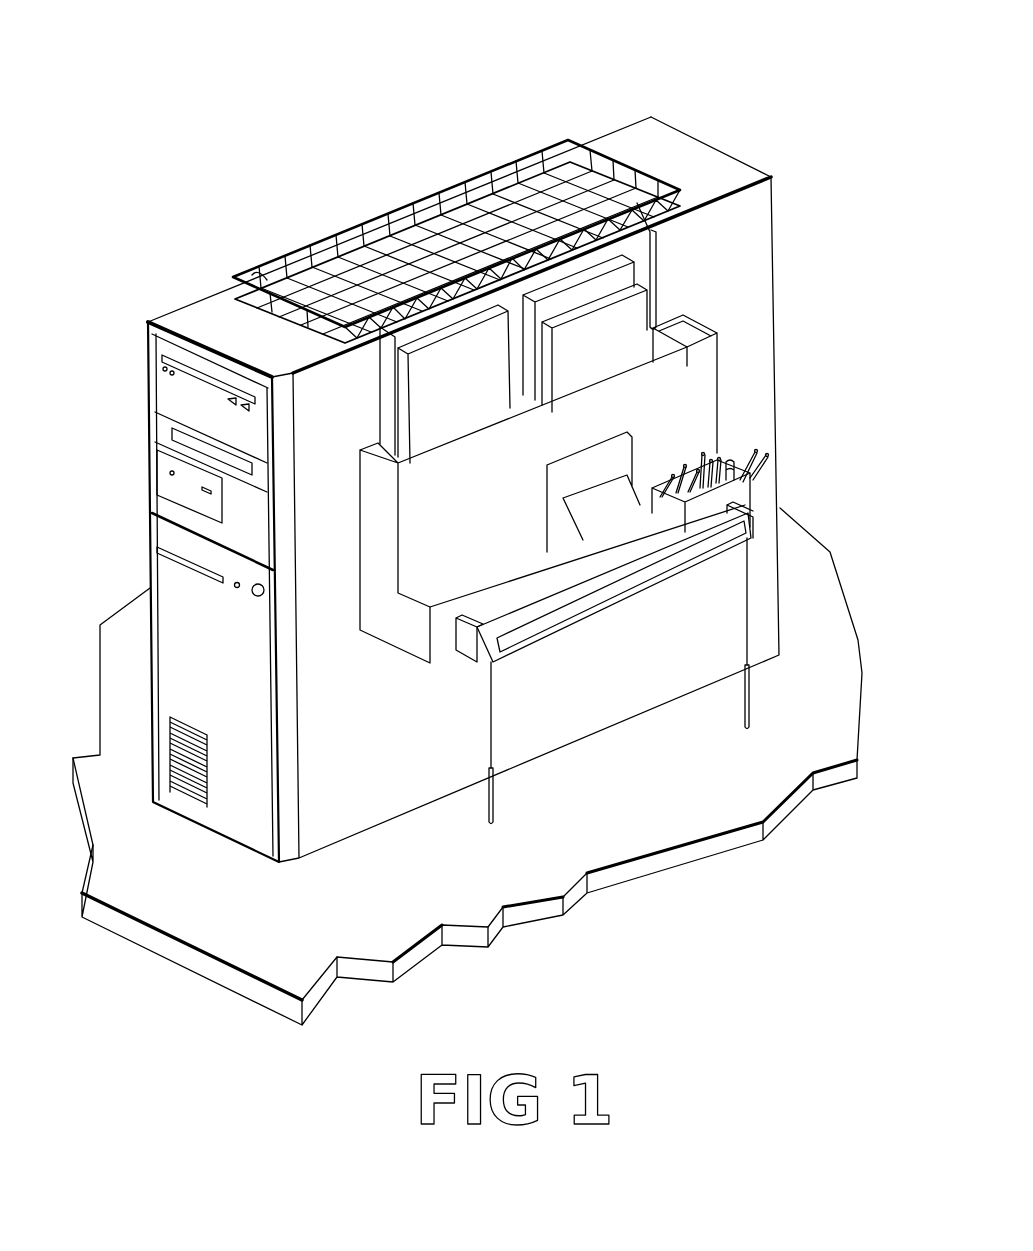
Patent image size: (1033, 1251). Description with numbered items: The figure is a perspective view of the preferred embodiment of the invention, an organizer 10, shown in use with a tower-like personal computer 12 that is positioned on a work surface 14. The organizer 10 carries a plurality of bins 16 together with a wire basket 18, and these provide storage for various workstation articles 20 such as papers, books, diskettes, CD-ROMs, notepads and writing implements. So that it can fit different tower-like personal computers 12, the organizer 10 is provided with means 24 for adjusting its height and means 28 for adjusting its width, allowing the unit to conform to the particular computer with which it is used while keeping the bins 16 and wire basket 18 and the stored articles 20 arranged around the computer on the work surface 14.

The organizer 10 is at (758, 258).
The personal computer 12 is at (761, 346).
The work surface 14 is at (808, 584).
The bins 16 is at (380, 503).
The wire basket 18 is at (408, 200).
The workstation articles 20 is at (432, 391).
The means for adjusting the height 24 is at (497, 795).
The means for adjusting the width 28 is at (548, 200).